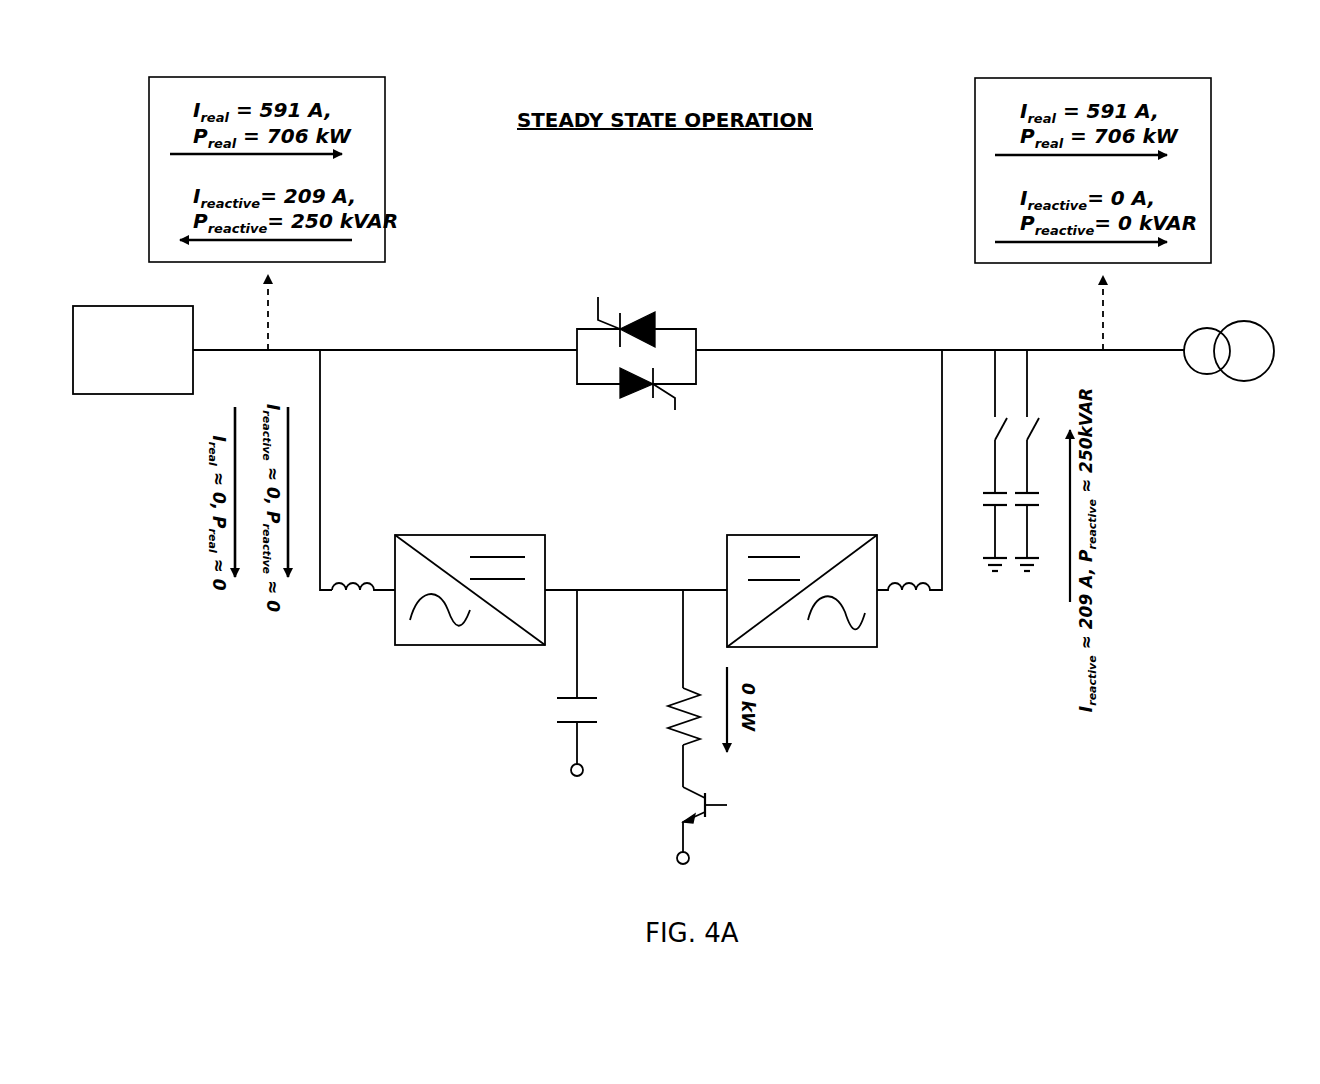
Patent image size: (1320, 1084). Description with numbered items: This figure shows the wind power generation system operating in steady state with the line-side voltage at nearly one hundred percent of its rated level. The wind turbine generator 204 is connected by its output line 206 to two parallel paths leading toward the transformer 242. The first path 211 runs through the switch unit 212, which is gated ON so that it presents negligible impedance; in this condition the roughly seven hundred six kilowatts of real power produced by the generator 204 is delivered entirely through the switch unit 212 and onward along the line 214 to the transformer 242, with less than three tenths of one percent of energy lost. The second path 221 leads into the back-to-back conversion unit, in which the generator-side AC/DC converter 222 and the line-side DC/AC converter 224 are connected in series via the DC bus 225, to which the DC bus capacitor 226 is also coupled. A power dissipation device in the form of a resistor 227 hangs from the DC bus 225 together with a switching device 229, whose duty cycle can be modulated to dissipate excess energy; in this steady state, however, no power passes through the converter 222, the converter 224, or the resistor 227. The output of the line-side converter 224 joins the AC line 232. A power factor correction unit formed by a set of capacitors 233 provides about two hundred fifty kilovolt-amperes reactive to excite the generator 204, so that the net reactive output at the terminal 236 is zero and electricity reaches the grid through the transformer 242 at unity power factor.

The wind turbine generator 204 is at (118, 306).
The generator output line 206 is at (250, 348).
The first path 211 is at (435, 350).
The switch unit 212 is at (577, 332).
The bus line segment 214 is at (822, 352).
The second path 221 is at (320, 462).
The generator-side AC/DC converter 222 is at (545, 552).
The line-side DC/AC converter 224 is at (722, 553).
The DC bus 225 is at (657, 591).
The DC bus capacitor 226 is at (587, 697).
The resistor 227 is at (680, 688).
The switching device 229 is at (710, 793).
The AC line 232 is at (958, 350).
The set of capacitors 233 is at (993, 492).
The terminal 236 is at (1077, 350).
The transformer 242 is at (1262, 327).